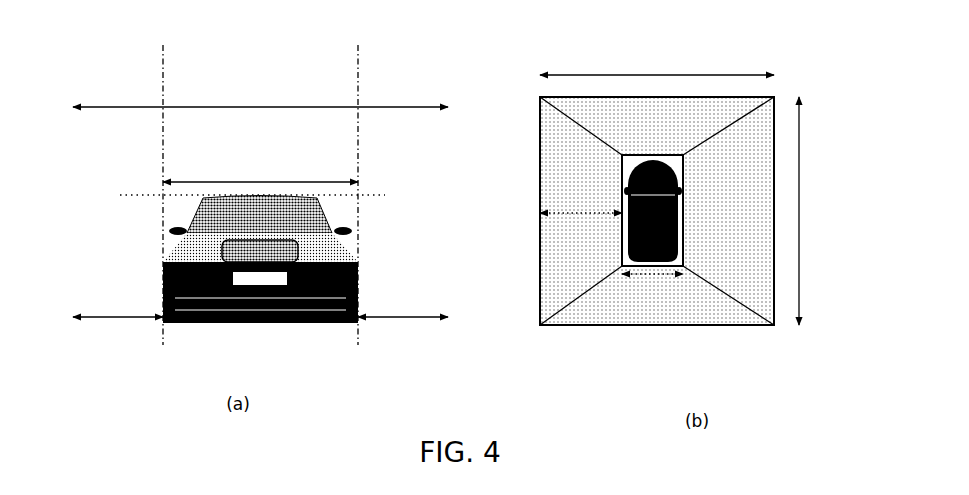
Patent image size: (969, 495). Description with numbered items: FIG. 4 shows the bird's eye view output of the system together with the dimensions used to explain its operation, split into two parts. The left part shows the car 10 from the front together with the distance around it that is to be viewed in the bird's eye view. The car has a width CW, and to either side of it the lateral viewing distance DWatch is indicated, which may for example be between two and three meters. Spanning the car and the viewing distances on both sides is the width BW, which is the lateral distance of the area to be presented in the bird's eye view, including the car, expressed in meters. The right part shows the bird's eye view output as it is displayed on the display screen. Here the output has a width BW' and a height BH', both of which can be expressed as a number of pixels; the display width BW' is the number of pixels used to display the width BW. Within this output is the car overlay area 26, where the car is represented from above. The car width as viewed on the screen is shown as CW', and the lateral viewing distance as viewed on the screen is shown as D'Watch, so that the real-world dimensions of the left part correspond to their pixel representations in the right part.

The car 10 is at (353, 253).
The car overlay area 26 is at (617, 183).
The bird's eye view width BW is at (260, 95).
The car width CW is at (260, 163).
The lateral viewing distance DWatch is at (260, 306).
The bird's eye view output width BW' is at (657, 56).
The bird's eye view output height BH' is at (824, 211).
The car width as viewed on the screen CW' is at (659, 318).
The lateral viewing distance as viewed on the screen D'Watch is at (554, 257).